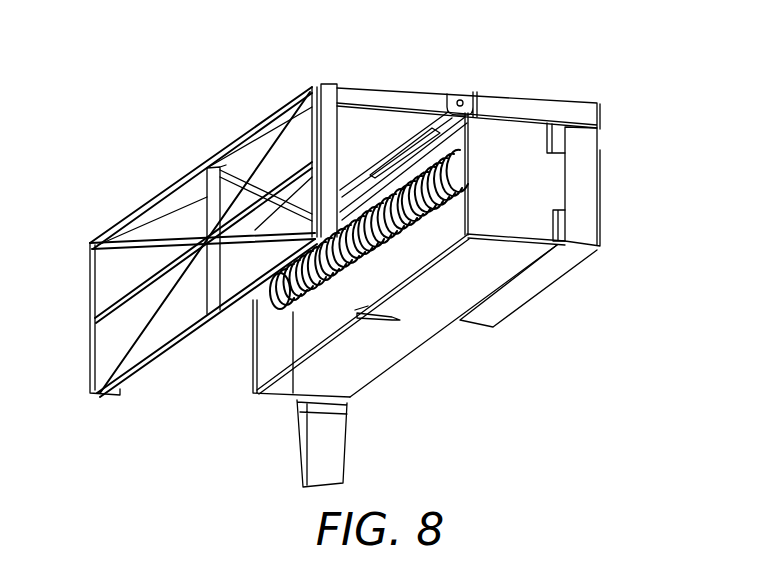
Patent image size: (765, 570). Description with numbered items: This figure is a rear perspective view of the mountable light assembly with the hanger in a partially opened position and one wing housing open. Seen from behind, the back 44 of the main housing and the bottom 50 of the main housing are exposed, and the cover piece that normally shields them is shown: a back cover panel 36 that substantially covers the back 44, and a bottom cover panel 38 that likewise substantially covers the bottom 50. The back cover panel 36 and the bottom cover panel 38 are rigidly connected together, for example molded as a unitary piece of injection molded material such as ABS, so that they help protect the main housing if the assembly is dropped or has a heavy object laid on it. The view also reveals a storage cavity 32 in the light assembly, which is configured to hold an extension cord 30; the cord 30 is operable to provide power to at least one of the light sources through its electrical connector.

The extension cord 30 is at (398, 235).
The storage cavity 32 is at (377, 285).
The back cover panel 36 is at (383, 92).
The bottom cover panel 38 is at (175, 350).
The back of the main housing 44 is at (306, 332).
The bottom of the main housing 50 is at (495, 263).